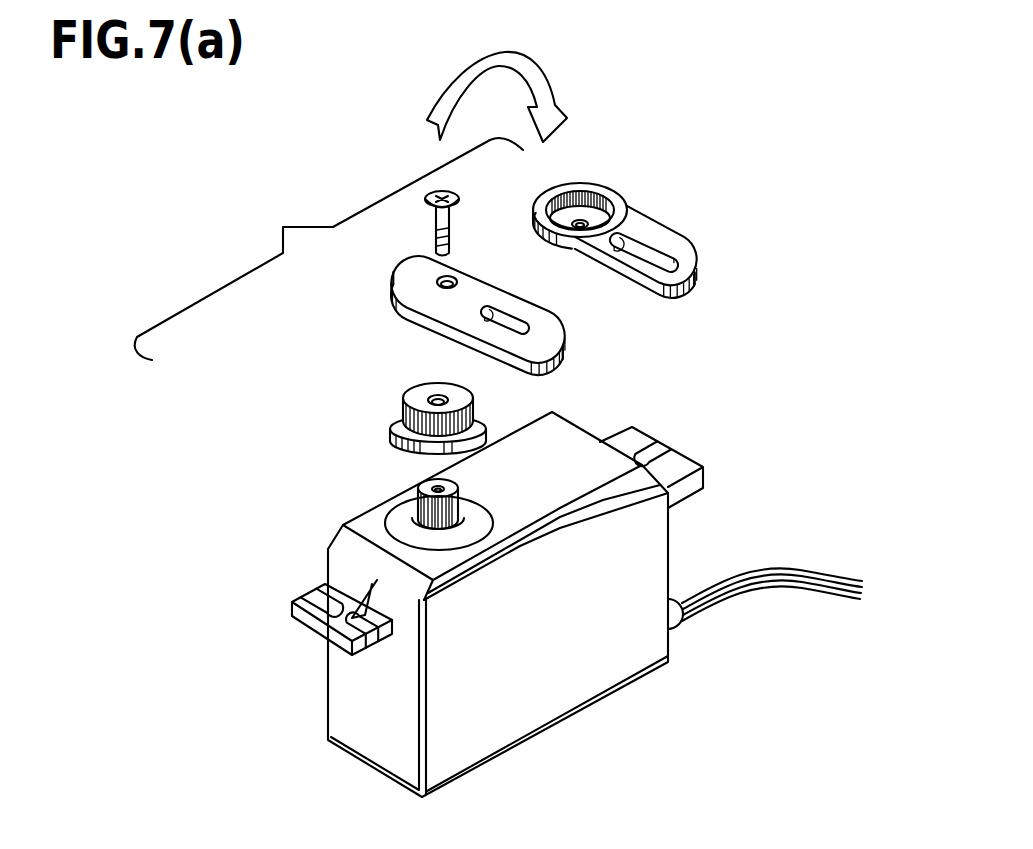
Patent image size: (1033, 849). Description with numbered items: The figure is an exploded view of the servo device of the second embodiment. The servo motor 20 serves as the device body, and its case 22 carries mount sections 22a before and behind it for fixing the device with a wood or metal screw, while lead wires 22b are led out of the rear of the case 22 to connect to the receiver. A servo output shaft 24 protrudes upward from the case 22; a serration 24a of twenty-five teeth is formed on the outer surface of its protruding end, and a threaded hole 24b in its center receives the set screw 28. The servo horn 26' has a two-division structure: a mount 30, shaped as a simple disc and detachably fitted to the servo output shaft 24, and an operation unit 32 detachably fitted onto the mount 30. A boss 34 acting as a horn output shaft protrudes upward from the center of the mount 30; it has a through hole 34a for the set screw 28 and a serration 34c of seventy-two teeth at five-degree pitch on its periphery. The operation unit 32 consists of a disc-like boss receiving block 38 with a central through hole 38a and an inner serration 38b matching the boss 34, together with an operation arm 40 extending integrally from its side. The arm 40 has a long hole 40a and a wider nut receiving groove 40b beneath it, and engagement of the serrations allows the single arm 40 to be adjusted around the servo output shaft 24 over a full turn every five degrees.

The servo motor 20 is at (556, 568).
The case 22 is at (573, 680).
The mount sections 22a is at (308, 605).
The lead wires 22b is at (760, 568).
The servo output shaft 24 is at (485, 506).
The serration 24a is at (425, 508).
The threaded hole 24b is at (448, 486).
The servo horn 26' is at (329, 249).
The set screw 28 is at (457, 196).
The mount 30 is at (450, 396).
The operation unit 32 is at (486, 296).
The boss 34 is at (424, 396).
The through hole 34a is at (432, 398).
The serration 34c is at (404, 425).
The boss receiving block 38 is at (415, 272).
The through hole 38a is at (450, 278).
The inner serration 38b is at (578, 196).
The operation arm 40 is at (513, 304).
The long hole 40a is at (528, 330).
The nut receiving groove 40b is at (675, 266).